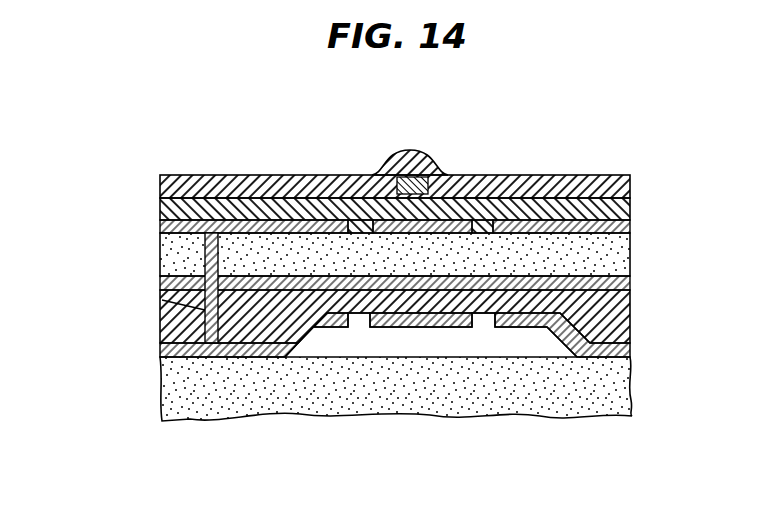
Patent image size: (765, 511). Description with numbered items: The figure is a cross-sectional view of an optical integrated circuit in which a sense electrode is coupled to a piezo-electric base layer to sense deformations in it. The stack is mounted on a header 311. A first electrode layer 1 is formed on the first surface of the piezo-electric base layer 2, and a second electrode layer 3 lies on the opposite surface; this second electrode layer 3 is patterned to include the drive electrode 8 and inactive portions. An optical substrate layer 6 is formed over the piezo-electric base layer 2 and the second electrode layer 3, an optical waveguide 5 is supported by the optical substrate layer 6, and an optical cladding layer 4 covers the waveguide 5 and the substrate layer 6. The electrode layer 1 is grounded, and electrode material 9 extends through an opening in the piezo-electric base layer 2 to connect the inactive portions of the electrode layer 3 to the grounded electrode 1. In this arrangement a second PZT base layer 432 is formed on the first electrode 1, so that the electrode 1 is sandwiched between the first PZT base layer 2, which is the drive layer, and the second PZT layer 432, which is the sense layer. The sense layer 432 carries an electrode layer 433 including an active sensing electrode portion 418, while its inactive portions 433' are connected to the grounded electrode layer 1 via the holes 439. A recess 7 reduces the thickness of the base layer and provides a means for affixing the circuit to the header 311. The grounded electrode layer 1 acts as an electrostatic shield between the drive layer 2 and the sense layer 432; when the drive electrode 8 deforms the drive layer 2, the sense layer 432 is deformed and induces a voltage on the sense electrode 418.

The first electrode layer 1 is at (162, 281).
The piezo-electric base layer 2 is at (630, 250).
The second electrode layer 3 is at (630, 222).
The optical cladding layer 4 is at (537, 176).
The optical waveguide 5 is at (447, 173).
The optical substrate layer 6 is at (630, 210).
The recess 7 is at (498, 340).
The drive electrode 8 is at (376, 224).
The electrode material 9 is at (205, 249).
The header 311 is at (396, 389).
The sense electrode 418 is at (425, 328).
The second PZT base layer 432 is at (630, 311).
The electrode layer 433 is at (190, 335).
The inactive portions 433' is at (491, 386).
The holes 439 is at (162, 300).